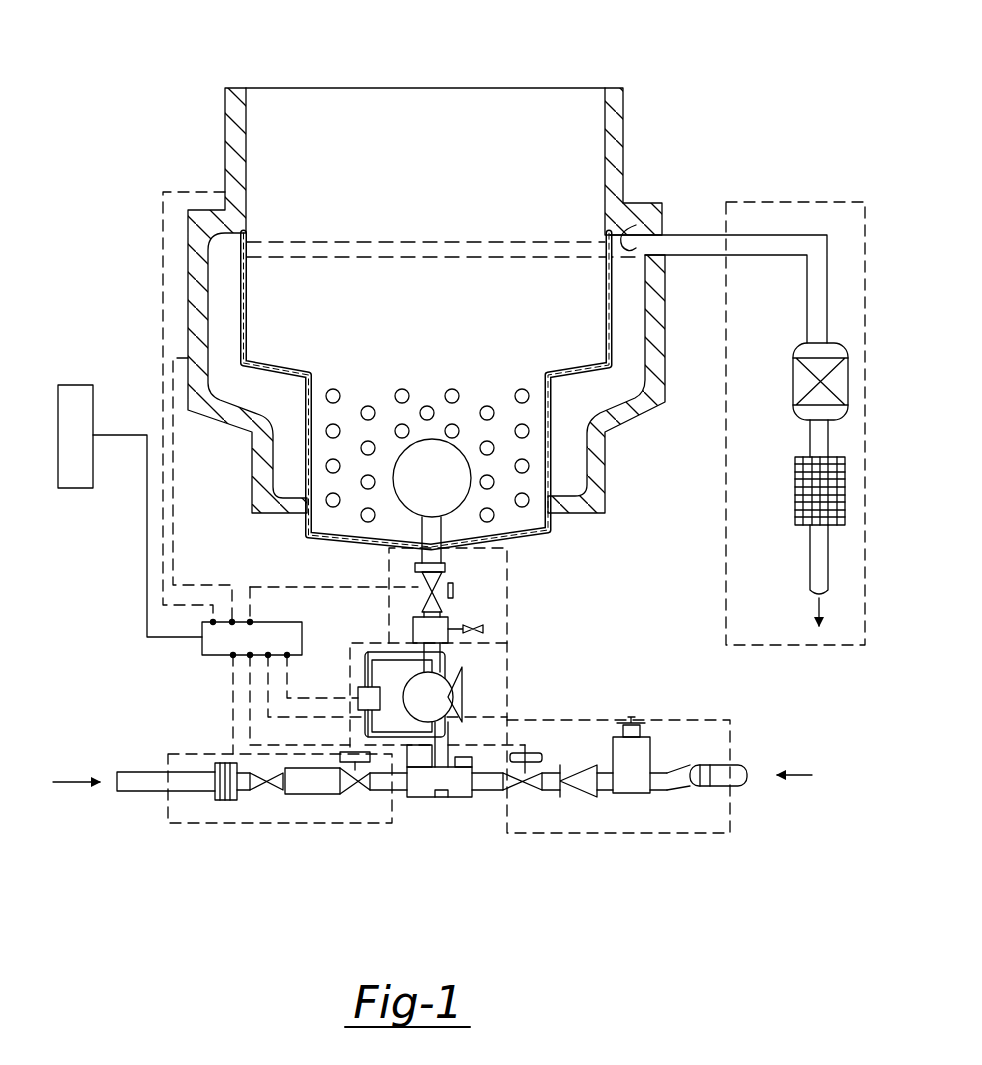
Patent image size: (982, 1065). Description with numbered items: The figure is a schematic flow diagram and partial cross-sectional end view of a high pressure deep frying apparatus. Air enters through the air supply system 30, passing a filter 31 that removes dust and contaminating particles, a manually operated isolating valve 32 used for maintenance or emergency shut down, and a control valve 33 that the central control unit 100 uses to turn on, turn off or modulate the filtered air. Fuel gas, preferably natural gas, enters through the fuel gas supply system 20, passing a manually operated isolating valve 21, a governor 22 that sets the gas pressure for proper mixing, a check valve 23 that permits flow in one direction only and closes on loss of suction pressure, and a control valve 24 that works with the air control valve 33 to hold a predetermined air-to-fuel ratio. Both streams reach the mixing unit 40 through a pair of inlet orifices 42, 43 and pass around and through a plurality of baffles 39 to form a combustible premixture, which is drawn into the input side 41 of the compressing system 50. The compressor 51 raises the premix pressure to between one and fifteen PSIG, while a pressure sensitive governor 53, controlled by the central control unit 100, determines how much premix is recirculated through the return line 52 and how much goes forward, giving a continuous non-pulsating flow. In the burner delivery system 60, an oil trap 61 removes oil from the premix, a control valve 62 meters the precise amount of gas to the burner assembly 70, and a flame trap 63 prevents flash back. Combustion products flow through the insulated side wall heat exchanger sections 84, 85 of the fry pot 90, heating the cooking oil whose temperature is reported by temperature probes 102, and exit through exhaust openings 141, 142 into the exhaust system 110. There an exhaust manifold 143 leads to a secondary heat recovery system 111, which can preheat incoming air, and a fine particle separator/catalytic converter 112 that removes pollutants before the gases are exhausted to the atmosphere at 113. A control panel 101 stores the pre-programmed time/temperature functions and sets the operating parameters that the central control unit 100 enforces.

The fuel gas supply system 20 is at (733, 812).
The isolating valve 21 is at (673, 778).
The governor 22 is at (630, 795).
The check valve 23 is at (580, 795).
The control valve 24 is at (520, 790).
The air supply system 30 is at (167, 822).
The filter 31 is at (227, 800).
The isolating valve 32 is at (267, 790).
The control valve 33 is at (355, 783).
The baffles 39 is at (443, 798).
The mixing unit 40 is at (427, 800).
The input side 41 is at (447, 757).
The inlet orifice 42 is at (397, 790).
The inlet orifice 43 is at (466, 797).
The compressing system 50 is at (508, 652).
The compressor 51 is at (468, 697).
The return line 52 is at (358, 733).
The pressure sensitive governor 53 is at (358, 695).
The burner delivery system 60 is at (510, 552).
The oil trap 61 is at (448, 628).
The control valve 62 is at (455, 591).
The flame trap 63 is at (415, 567).
The burner assembly 70 is at (418, 496).
The heat exchanger section 84 is at (222, 296).
The heat exchanger section 85 is at (628, 388).
The fry pot 90 is at (622, 88).
The central control unit 100 is at (205, 650).
The control panel 101 is at (73, 385).
The temperature probes 102 is at (250, 194).
The exhaust system 110 is at (773, 202).
The secondary heat recovery system 111 is at (797, 372).
The fine particle separator/catalytic converter 112 is at (797, 478).
The atmospheric exhaust outlet 113 is at (812, 543).
The exhaust opening 141 is at (208, 256).
The exhaust opening 142 is at (628, 236).
The exhaust manifold 143 is at (710, 250).